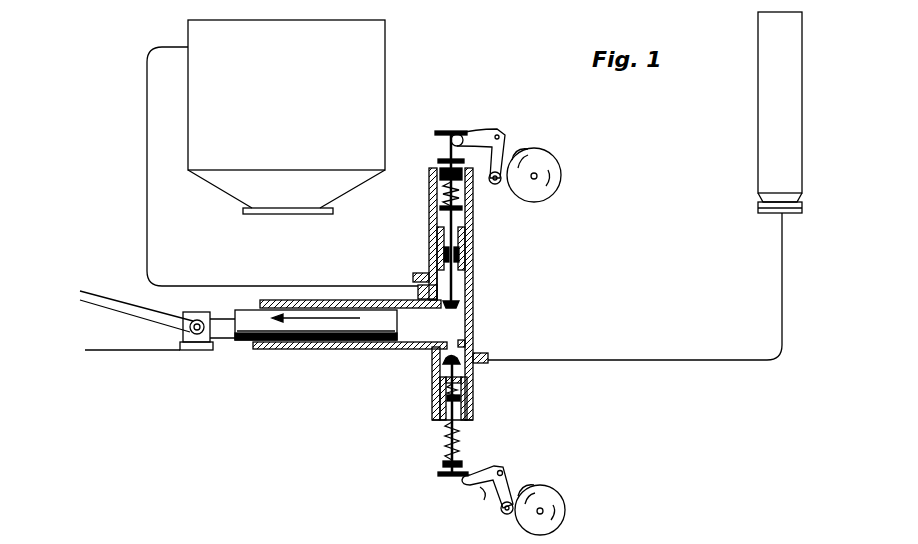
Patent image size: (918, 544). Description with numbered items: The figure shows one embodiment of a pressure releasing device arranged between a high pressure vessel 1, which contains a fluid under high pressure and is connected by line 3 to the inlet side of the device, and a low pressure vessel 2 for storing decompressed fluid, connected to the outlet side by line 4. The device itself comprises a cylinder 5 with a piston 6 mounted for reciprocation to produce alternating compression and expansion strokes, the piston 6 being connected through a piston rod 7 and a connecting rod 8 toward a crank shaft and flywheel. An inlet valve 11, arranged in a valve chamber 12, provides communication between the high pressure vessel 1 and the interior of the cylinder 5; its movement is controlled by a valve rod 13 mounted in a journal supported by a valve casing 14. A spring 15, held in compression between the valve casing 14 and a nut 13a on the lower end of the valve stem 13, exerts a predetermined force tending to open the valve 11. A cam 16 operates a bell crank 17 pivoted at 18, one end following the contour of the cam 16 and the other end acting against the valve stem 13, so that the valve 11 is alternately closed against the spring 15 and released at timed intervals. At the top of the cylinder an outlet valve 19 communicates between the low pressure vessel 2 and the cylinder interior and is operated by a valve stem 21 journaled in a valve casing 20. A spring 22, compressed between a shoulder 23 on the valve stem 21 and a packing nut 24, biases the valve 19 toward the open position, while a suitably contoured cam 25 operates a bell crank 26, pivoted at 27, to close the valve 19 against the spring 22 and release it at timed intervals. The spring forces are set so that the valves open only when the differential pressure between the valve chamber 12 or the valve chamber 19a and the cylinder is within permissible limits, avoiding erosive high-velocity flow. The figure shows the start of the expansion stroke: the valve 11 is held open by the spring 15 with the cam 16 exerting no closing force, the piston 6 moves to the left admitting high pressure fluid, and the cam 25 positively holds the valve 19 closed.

The high pressure vessel 1 is at (803, 53).
The low pressure vessel 2 is at (386, 57).
The line 3 is at (782, 300).
The line 4 is at (148, 242).
The cylinder 5 is at (404, 350).
The piston 6 is at (255, 341).
The piston rod 7 is at (228, 341).
The connecting rod 8 is at (152, 317).
The inlet valve 11 is at (462, 364).
The valve chamber 12 is at (432, 366).
The valve rod 13 is at (440, 396).
The nut 13a is at (463, 466).
The valve casing 14 is at (468, 400).
The spring 15 is at (445, 437).
The cam 16 is at (560, 494).
The bell crank 17 is at (487, 492).
The pivot 18 is at (504, 472).
The outlet valve 19 is at (460, 308).
The valve chamber 19a is at (463, 276).
The valve casing 20 is at (474, 268).
The valve stem 21 is at (446, 142).
The spring 22 is at (435, 186).
The shoulder 23 is at (462, 209).
The packing nut 24 is at (438, 162).
The cam 25 is at (548, 153).
The bell crank 26 is at (478, 130).
The pivot 27 is at (500, 133).